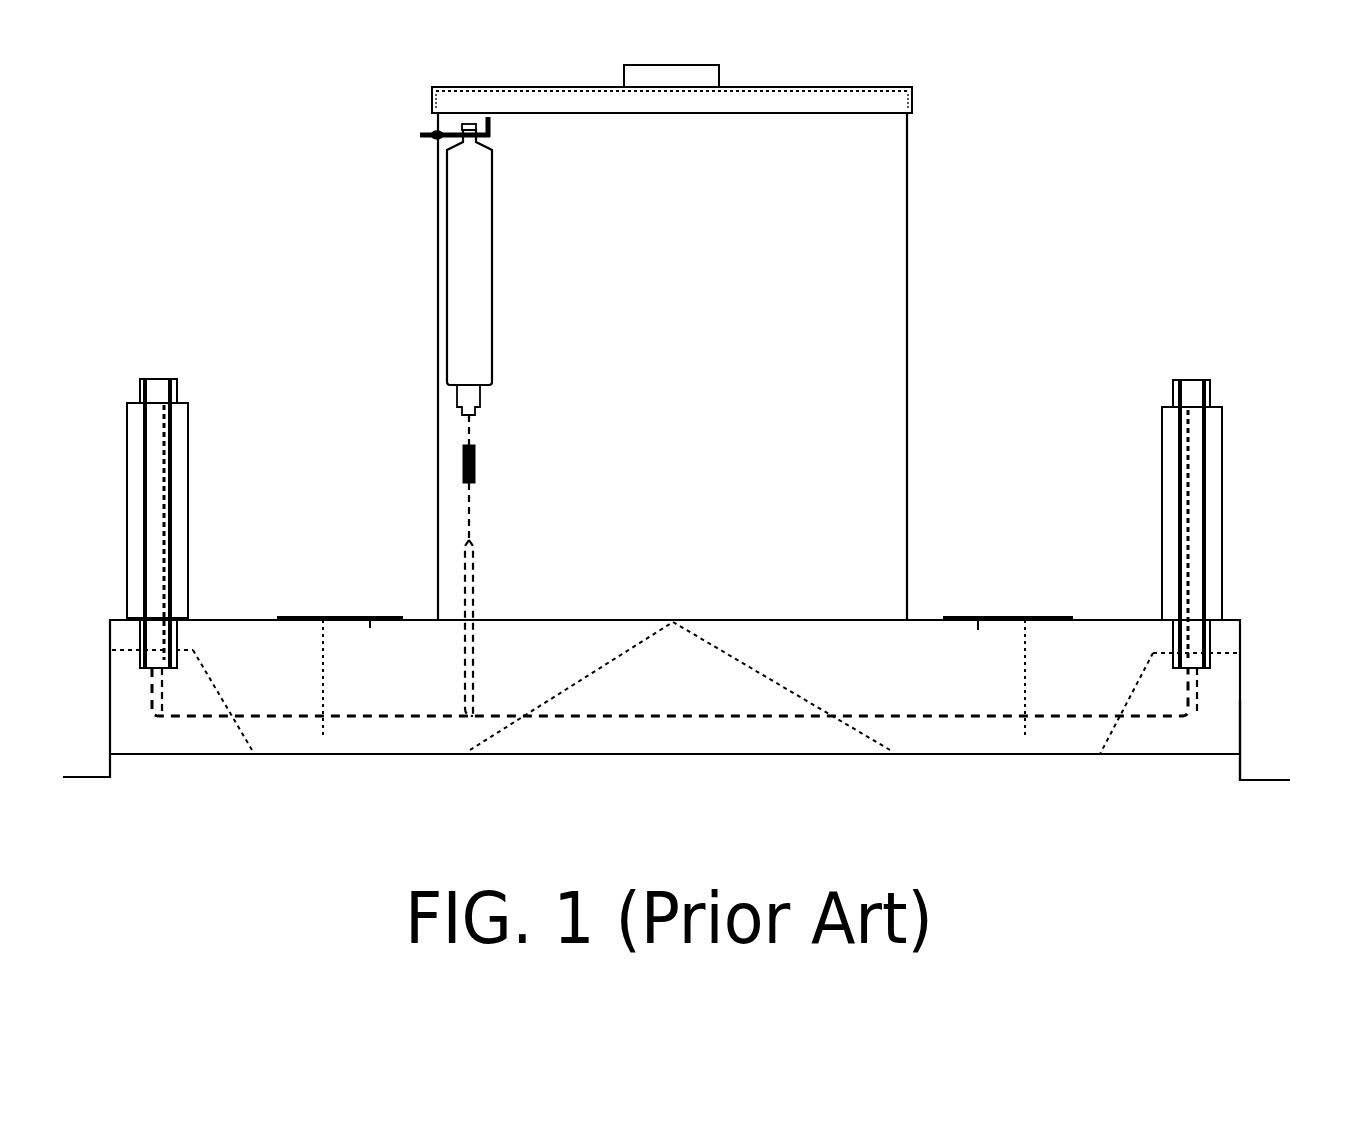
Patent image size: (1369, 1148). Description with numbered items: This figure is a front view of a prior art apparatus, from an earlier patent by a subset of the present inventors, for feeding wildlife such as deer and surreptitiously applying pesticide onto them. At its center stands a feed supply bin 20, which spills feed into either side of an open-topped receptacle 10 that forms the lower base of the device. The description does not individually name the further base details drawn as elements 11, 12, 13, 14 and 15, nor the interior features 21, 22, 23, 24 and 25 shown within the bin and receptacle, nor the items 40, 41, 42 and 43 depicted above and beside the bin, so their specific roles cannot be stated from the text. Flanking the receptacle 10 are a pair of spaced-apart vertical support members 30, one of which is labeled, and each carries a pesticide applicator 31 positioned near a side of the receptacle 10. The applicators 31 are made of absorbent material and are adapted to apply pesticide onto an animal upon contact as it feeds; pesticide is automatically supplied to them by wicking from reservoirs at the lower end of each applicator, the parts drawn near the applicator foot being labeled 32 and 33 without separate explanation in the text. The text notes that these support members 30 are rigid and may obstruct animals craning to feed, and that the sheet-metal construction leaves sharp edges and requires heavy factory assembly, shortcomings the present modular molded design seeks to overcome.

The receptacle 10 is at (947, 678).
The base plate 11 is at (1240, 693).
The bottom surface 12 is at (967, 757).
The base foot 13 is at (1263, 778).
The left passage 14 is at (1067, 735).
The right passage 15 is at (1113, 727).
The feed supply bin 20 is at (907, 336).
The gas conduit 21 is at (320, 743).
The vent passage 22 is at (323, 683).
The heater 23 is at (300, 617).
The lid 24 is at (912, 100).
The distribution channel 25 is at (777, 685).
The vertical support member 30 is at (1205, 475).
The pesticide applicator 31 is at (1222, 552).
The right dispenser outlet 32 is at (1210, 638).
The right dispenser cap 33 is at (1210, 390).
The gas cylinder 40 is at (473, 298).
The supply tube 41 is at (475, 594).
The left dispenser 42 is at (172, 430).
The valve 43 is at (475, 470).